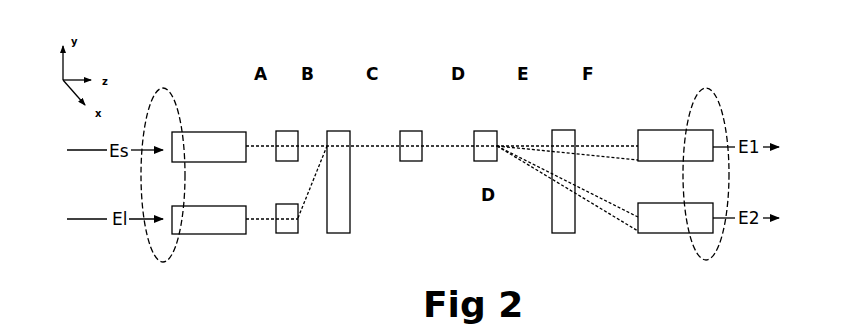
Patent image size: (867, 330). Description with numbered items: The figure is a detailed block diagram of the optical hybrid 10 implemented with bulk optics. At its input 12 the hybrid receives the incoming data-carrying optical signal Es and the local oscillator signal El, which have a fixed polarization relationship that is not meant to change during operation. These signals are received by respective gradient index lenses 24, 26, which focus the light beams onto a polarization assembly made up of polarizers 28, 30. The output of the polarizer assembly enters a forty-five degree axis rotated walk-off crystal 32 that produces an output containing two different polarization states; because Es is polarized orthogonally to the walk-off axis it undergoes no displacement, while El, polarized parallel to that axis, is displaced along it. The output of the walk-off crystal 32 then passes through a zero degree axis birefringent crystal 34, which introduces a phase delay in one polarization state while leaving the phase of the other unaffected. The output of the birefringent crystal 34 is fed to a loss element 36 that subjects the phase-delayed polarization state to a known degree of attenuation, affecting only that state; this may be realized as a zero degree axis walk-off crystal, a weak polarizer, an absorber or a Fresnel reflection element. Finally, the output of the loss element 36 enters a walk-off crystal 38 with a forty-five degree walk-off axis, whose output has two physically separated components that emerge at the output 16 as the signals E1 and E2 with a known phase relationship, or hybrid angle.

The optical hybrid 10 is at (637, 70).
The input 12 is at (165, 91).
The output 16 is at (708, 90).
The GRIN lens 24 is at (205, 132).
The GRIN lens 26 is at (205, 206).
The polarizer 28 is at (280, 131).
The polarizer 30 is at (285, 233).
The walk-off crystal 32 is at (344, 131).
The birefringent crystal 34 is at (410, 131).
The loss element 36 is at (490, 131).
The walk-off crystal 38 is at (563, 233).